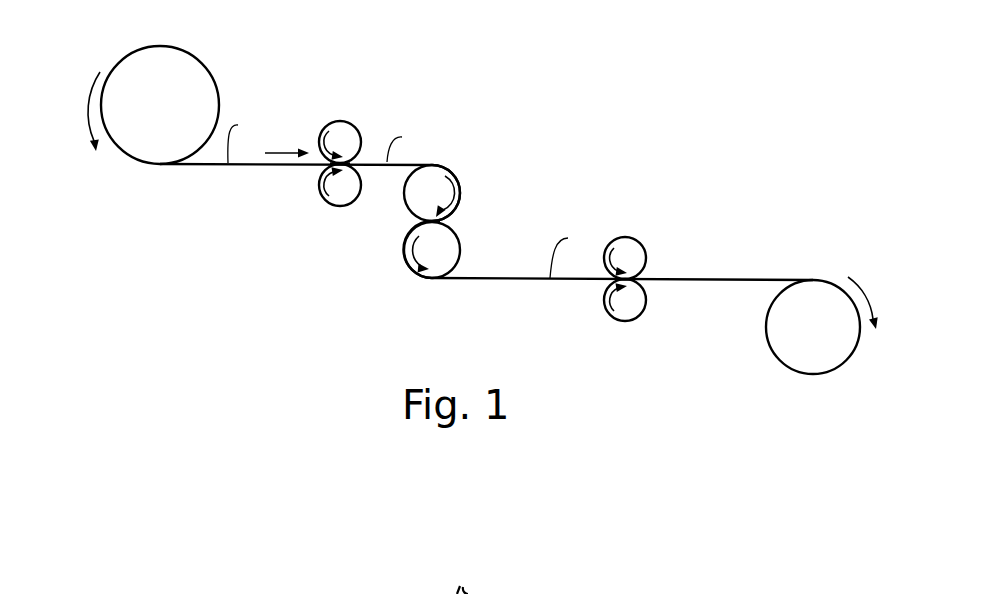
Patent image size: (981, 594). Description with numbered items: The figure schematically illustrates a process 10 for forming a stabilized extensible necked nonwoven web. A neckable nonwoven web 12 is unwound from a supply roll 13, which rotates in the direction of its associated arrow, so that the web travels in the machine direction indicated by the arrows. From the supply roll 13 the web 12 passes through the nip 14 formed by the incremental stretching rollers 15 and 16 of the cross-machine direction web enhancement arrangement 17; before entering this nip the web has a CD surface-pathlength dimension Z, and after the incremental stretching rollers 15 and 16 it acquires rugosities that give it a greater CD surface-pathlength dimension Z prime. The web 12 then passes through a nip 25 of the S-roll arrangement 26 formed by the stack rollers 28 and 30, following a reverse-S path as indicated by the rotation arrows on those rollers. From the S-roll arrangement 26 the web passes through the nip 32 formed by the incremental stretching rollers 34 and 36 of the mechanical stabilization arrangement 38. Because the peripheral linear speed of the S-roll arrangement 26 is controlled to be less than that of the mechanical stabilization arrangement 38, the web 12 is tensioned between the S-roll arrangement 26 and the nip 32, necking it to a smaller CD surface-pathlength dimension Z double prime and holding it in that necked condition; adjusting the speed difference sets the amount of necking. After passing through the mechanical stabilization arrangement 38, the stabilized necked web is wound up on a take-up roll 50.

The process for forming a stabilized extensible necked nonwoven web 10 is at (452, 125).
The neckable nonwoven web 12 is at (218, 166).
The supply roll 13 is at (201, 62).
The nip 14 is at (313, 171).
The incremental stretching roller 15 is at (355, 126).
The incremental stretching roller 16 is at (326, 201).
The cross-machine direction web enhancement arrangement 17 is at (313, 113).
The nip 25 is at (463, 221).
The S-roll arrangement 26 is at (389, 244).
The stack roller 28 is at (454, 172).
The stack roller 30 is at (461, 258).
The nip 32 is at (600, 287).
The incremental stretching roller 34 is at (640, 244).
The incremental stretching roller 36 is at (640, 314).
The mechanical stabilization arrangement 38 is at (667, 260).
The take-up roll 50 is at (805, 374).